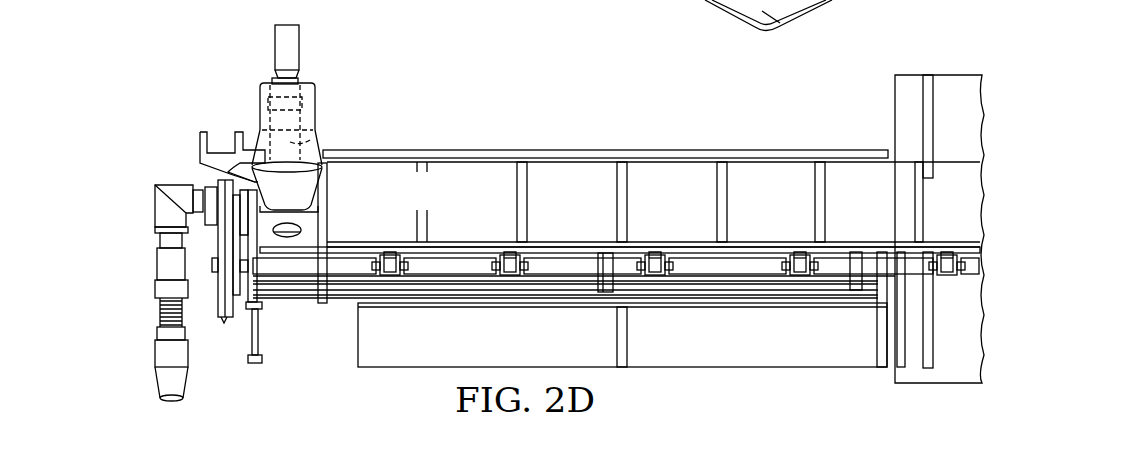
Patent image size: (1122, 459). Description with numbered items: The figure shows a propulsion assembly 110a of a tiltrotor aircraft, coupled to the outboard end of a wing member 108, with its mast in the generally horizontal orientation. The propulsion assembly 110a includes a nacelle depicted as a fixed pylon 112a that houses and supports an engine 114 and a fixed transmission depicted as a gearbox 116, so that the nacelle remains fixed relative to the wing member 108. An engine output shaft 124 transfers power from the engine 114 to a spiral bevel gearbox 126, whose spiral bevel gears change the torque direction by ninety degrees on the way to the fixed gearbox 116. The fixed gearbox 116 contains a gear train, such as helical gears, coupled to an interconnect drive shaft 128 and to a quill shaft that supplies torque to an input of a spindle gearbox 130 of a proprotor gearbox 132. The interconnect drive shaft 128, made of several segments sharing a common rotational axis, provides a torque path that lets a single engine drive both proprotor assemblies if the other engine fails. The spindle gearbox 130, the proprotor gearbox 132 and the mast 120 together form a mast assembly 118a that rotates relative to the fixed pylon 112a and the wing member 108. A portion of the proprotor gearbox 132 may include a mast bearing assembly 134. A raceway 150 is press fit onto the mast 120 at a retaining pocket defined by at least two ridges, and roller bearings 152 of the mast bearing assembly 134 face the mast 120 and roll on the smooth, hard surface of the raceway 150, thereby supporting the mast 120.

The wing member 108 is at (578, 175).
The propulsion assembly 110a is at (164, 264).
The fixed pylon 112a is at (153, 290).
The engine 114 is at (155, 353).
The transmission 116 is at (225, 318).
The mast assembly 118a is at (356, 187).
The mast 120 is at (329, 116).
The engine output shaft 124 is at (160, 237).
The spiral bevel gearbox 126 is at (178, 185).
The interconnect drive shaft 128 is at (343, 267).
The spindle gearbox 130 is at (308, 223).
The proprotor gearbox 132 is at (306, 186).
The mast bearing assembly 134 is at (258, 101).
The raceway 150 is at (300, 73).
The roller bearings 152 is at (312, 103).